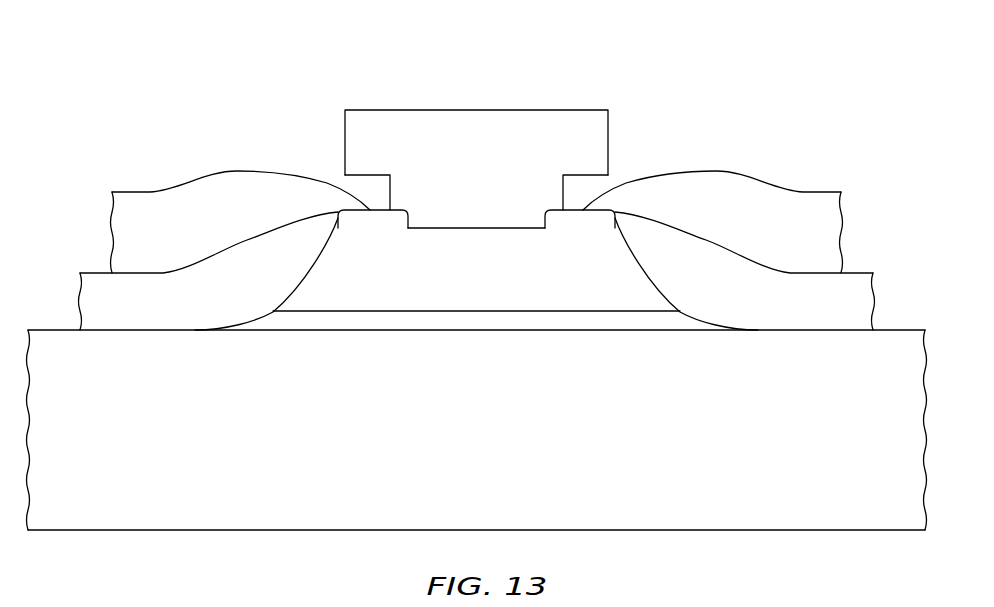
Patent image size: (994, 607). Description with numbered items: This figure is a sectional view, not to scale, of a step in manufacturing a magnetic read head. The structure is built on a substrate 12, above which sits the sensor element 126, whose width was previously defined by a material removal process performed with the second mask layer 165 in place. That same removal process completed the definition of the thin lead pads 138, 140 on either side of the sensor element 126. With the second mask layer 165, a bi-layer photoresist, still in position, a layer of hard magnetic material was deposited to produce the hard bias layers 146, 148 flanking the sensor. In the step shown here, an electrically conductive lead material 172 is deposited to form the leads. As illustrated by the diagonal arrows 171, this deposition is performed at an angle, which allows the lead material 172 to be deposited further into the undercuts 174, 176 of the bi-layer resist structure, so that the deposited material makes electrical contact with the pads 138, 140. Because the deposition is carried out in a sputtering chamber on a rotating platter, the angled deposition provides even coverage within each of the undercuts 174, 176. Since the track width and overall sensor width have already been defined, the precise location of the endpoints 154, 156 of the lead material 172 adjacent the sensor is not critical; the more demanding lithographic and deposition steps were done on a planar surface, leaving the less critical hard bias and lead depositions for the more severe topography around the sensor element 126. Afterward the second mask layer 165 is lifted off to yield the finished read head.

The substrate 12 is at (473, 492).
The sensor element 126 is at (467, 289).
The thin lead pad 138 is at (360, 223).
The thin lead pad 140 is at (592, 223).
The hard bias layer 146 is at (205, 302).
The hard bias layer 148 is at (707, 299).
The endpoint 154 is at (367, 209).
The endpoint 156 is at (586, 209).
The second mask layer 165 is at (465, 153).
The diagonal arrows 171 is at (237, 80).
The electrically conductive lead material 172 is at (176, 234).
The undercut 174 is at (366, 172).
The undercut 176 is at (587, 172).